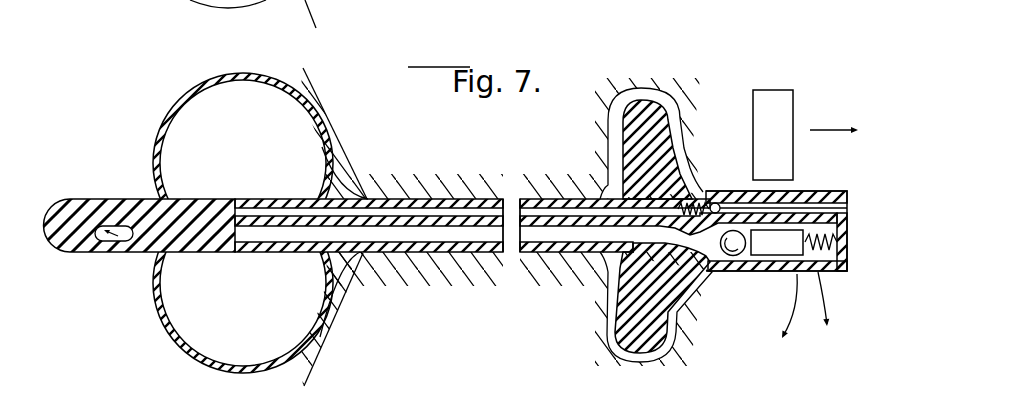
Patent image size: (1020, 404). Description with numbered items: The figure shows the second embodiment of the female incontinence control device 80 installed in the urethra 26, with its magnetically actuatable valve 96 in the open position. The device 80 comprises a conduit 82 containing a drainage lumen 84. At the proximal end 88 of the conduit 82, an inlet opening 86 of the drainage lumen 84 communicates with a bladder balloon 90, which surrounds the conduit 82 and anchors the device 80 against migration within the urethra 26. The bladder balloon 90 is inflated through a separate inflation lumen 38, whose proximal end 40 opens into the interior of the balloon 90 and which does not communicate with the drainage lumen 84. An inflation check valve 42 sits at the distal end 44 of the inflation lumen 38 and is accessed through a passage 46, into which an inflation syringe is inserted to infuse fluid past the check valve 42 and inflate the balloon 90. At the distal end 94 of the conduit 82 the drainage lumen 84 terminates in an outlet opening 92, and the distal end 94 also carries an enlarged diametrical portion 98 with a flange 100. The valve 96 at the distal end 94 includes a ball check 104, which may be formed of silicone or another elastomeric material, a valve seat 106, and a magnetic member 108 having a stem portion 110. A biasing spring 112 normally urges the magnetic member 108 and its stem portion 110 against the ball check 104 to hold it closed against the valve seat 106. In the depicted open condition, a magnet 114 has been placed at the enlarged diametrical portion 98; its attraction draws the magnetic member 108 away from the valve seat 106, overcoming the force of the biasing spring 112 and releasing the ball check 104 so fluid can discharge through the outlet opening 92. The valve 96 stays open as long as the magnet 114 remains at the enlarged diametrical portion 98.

The urethra 26 is at (548, 193).
The inflation lumen 38 is at (407, 213).
The proximal end of inflation lumen 40 is at (240, 205).
The inflation check valve 42 is at (694, 204).
The distal end of inflation lumen 44 is at (731, 204).
The passage 46 is at (846, 207).
The female incontinence control device 80 is at (402, 130).
The conduit 82 is at (462, 193).
The drainage lumen 84 is at (457, 233).
The inlet opening 86 is at (97, 297).
The proximal end of conduit 88 is at (71, 194).
The bladder balloon 90 is at (195, 87).
The outlet opening 92 is at (828, 270).
The distal end of conduit 94 is at (838, 268).
The magnetically actuatable valve 96 is at (757, 268).
The enlarged diametrical portion 98 is at (806, 190).
The flange 100 is at (684, 160).
The ball check 104 is at (738, 257).
The valve seat 106 is at (731, 256).
The magnetic member 108 is at (790, 257).
The stem portion 110 is at (829, 194).
The biasing spring 112 is at (838, 241).
The magnet 114 is at (794, 96).